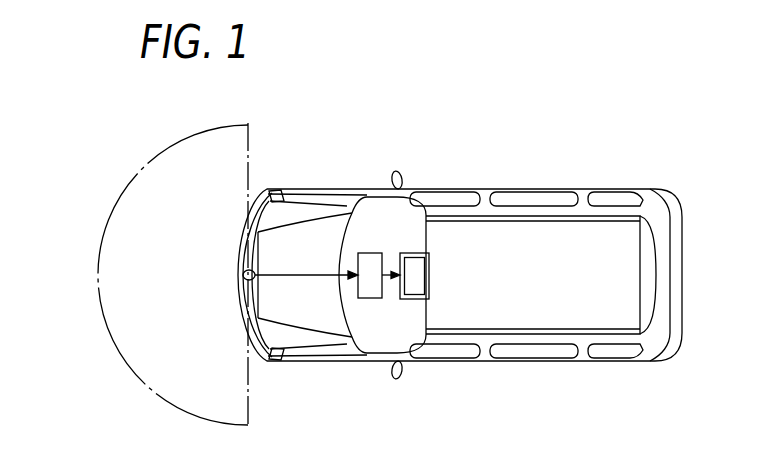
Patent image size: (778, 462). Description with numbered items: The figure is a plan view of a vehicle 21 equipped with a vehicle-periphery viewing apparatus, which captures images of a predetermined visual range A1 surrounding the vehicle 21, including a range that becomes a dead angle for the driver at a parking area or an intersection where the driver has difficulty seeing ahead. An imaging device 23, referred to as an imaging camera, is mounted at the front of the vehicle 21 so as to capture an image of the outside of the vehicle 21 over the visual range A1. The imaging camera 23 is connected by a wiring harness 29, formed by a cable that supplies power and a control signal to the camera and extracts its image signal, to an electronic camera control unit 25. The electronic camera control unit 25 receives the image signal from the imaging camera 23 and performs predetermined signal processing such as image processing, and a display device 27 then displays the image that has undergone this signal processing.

The vehicle 21 is at (615, 178).
The imaging device 23 is at (243, 275).
The electronic camera control unit 25 is at (370, 252).
The display device 27 is at (429, 277).
The wiring harness 29 is at (303, 277).
The visual range A1 is at (100, 241).